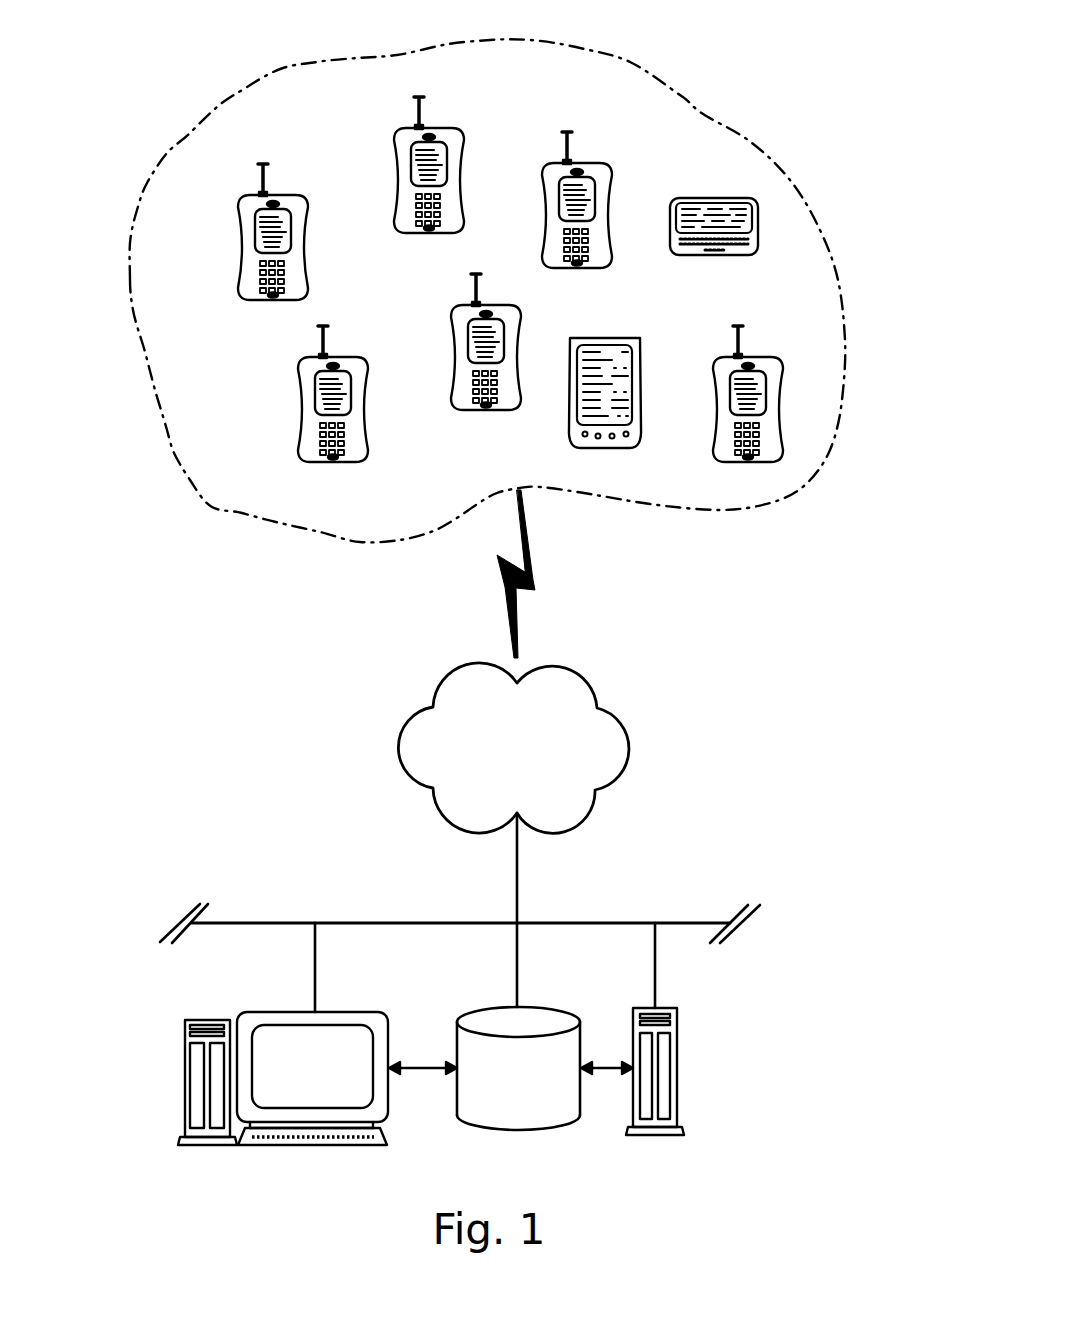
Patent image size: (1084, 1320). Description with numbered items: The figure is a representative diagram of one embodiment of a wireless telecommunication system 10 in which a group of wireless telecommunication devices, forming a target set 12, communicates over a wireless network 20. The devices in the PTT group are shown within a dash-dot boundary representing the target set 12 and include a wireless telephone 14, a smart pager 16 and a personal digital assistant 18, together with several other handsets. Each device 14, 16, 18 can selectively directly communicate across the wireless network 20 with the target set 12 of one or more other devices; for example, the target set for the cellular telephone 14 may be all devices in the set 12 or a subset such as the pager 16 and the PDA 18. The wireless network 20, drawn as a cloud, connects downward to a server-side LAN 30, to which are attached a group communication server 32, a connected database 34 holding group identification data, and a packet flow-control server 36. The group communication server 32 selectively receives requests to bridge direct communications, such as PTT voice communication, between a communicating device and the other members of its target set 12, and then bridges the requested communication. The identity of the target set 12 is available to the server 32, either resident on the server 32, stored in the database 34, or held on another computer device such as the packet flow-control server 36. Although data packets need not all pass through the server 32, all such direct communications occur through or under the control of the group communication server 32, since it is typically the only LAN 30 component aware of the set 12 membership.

The wireless telecommunication system 10 is at (778, 62).
The target set 12 is at (200, 517).
The wireless telephone 14 is at (456, 128).
The smart pager 16 is at (720, 256).
The personal digital assistant 18 is at (568, 412).
The wireless network 20 is at (628, 748).
The server-side LAN 30 is at (278, 923).
The group communication server 32 is at (283, 1010).
The database 34 is at (457, 1095).
The packet flow-control server 36 is at (677, 1110).